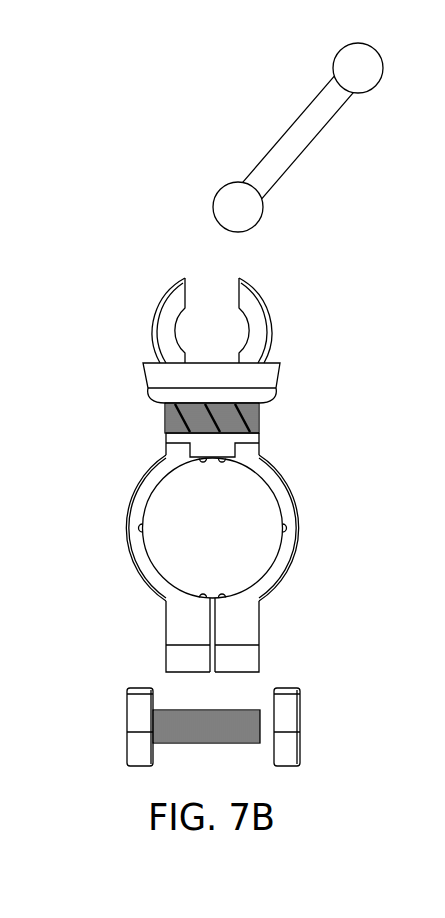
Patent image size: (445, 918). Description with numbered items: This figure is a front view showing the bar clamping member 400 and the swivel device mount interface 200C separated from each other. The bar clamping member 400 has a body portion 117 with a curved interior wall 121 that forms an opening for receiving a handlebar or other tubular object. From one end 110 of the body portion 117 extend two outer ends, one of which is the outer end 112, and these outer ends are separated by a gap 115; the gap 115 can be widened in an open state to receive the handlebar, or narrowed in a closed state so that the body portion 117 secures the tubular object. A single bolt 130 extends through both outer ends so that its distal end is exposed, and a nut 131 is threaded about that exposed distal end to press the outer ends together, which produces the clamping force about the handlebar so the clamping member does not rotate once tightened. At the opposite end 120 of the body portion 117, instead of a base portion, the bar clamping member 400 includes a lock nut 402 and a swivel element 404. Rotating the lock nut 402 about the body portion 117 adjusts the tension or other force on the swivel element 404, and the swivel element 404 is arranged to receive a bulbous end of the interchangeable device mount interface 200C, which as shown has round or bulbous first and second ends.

The swivel device mount interface 200C is at (239, 112).
The bar clamping member 400 is at (116, 353).
The end of the body portion 120 is at (208, 303).
The lock nut 402 is at (268, 378).
The swivel element 404 is at (167, 417).
The end of the body portion 110 is at (227, 562).
The body portion 117 is at (298, 512).
The curved interior wall 121 is at (272, 565).
The gap 115 is at (211, 604).
The outer end 112 is at (271, 633).
The bolt 130 is at (205, 710).
The nut 131 is at (135, 720).